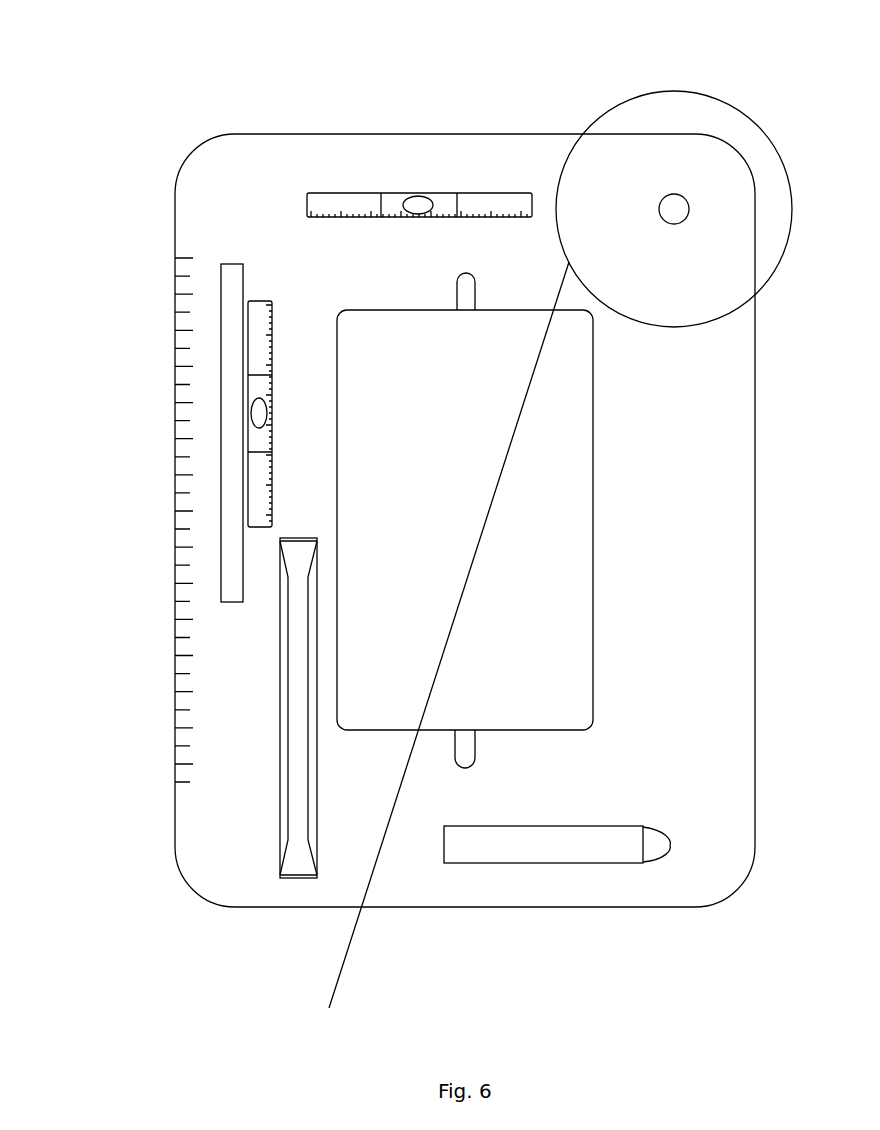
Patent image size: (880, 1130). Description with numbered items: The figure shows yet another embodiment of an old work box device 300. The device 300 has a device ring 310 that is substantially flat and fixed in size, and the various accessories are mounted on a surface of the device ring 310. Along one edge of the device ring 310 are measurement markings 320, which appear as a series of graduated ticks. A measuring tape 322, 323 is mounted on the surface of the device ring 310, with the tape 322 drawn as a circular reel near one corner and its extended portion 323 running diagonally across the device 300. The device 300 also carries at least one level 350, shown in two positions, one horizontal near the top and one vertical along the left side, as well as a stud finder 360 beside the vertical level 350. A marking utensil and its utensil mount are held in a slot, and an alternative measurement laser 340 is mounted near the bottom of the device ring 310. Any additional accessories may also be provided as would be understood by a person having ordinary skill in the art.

The old work box device 300 is at (173, 88).
The device ring 310 is at (290, 150).
The measurement markings 320 is at (185, 525).
The measuring tape 322 is at (767, 282).
The measuring tape 323 is at (348, 960).
The alternative measurement laser 340 is at (540, 850).
The level 350 is at (442, 200).
The stud finder 360 is at (225, 387).